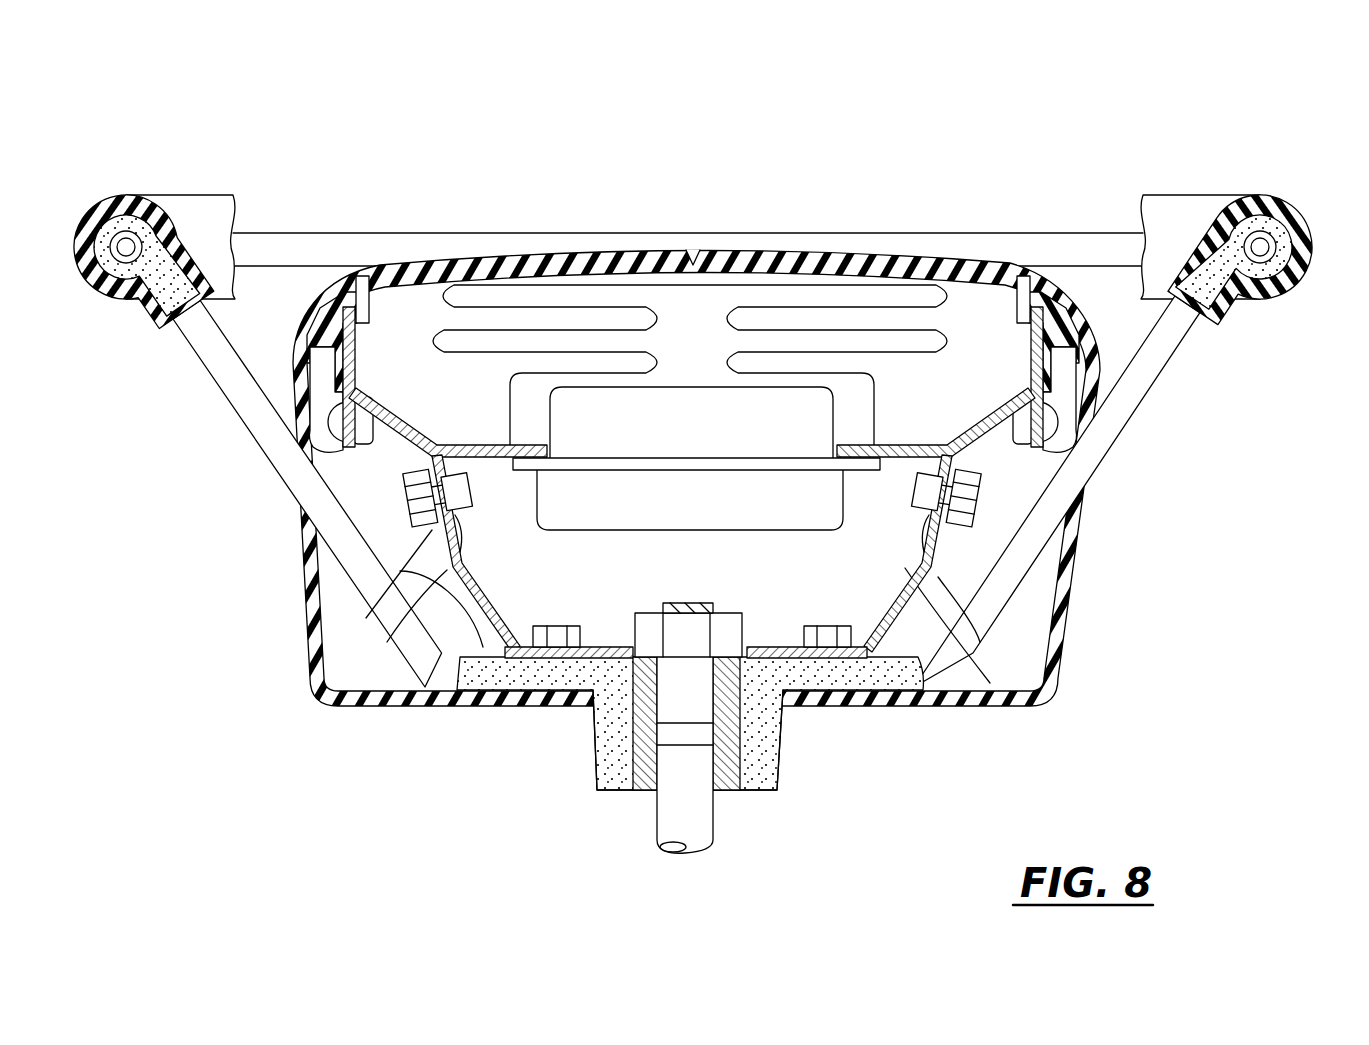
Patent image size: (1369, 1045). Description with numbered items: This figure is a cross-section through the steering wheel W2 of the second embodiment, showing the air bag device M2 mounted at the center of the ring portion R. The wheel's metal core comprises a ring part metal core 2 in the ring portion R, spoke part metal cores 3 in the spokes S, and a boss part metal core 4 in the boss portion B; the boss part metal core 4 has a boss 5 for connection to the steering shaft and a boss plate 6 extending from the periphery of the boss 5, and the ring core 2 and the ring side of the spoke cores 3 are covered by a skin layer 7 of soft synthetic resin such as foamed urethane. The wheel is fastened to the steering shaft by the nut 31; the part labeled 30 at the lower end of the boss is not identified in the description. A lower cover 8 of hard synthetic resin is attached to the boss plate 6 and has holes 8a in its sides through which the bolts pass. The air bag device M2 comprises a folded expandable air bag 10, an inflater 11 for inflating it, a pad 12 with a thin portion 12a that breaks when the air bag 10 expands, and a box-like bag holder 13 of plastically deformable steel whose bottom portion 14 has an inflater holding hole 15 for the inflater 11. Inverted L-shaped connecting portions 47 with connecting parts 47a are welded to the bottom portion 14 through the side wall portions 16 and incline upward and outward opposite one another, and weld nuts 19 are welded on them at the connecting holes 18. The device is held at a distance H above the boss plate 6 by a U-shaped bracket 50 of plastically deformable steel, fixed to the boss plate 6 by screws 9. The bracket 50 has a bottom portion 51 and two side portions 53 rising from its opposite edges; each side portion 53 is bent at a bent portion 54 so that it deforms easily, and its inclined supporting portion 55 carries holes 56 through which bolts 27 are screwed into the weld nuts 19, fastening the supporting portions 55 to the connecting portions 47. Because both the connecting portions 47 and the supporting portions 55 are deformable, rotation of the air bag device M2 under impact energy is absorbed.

The ring part metal core 2 is at (128, 228).
The spoke part metal cores 3 is at (172, 318).
The boss part metal core 4 is at (560, 773).
The boss 5 is at (730, 790).
The boss plate 6 is at (833, 687).
The skin layer 7 is at (1308, 248).
The lower cover 8 is at (316, 672).
The holes 8a is at (307, 543).
The screws 9 is at (552, 633).
The air bag 10 is at (572, 287).
The inflater 11 is at (703, 530).
The pad 12 is at (793, 262).
The thin portion 12a is at (693, 266).
The bag holder 13 is at (874, 466).
The bottom portion 14 is at (862, 488).
The inflater holding hole 15 is at (553, 457).
The side wall portions 16 is at (357, 447).
The connecting holes 18 is at (468, 487).
The weld nuts 19 is at (462, 497).
The bolts 27 is at (430, 512).
The shaft 30 is at (697, 850).
The nut 31 is at (654, 628).
The connecting portions 47 is at (428, 420).
The connecting parts 47a is at (462, 443).
The bracket 50 is at (462, 610).
The bottom portion 51 is at (563, 660).
The side portions 53 is at (490, 660).
The bent portion 54 is at (387, 642).
The supporting portions 55 is at (366, 618).
The holes 56 is at (412, 497).
The ring portion R is at (1183, 213).
The spokes S is at (1232, 332).
The air bag device M2 is at (519, 513).
The distance H is at (778, 605).
The boss portion B is at (814, 856).
The steering wheel W2 is at (1148, 125).